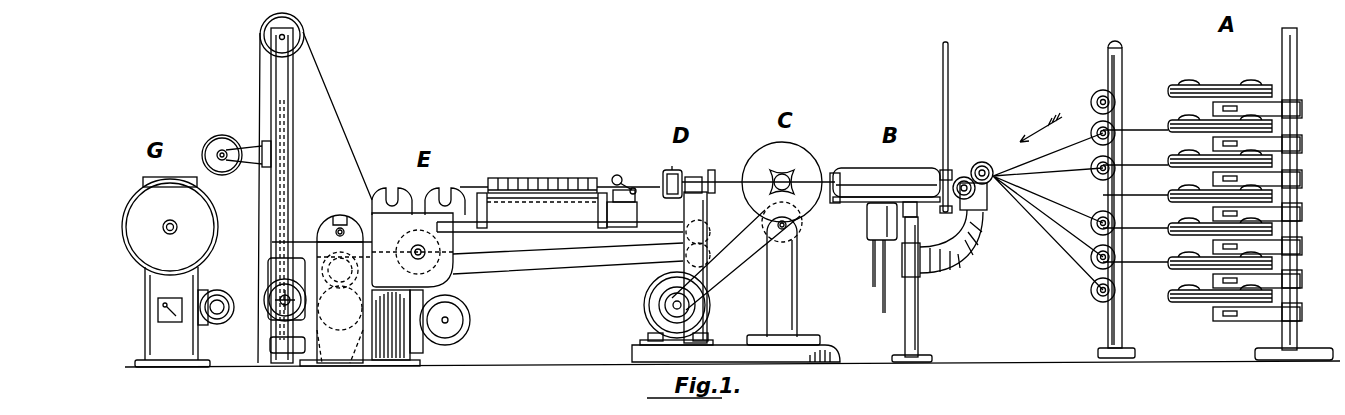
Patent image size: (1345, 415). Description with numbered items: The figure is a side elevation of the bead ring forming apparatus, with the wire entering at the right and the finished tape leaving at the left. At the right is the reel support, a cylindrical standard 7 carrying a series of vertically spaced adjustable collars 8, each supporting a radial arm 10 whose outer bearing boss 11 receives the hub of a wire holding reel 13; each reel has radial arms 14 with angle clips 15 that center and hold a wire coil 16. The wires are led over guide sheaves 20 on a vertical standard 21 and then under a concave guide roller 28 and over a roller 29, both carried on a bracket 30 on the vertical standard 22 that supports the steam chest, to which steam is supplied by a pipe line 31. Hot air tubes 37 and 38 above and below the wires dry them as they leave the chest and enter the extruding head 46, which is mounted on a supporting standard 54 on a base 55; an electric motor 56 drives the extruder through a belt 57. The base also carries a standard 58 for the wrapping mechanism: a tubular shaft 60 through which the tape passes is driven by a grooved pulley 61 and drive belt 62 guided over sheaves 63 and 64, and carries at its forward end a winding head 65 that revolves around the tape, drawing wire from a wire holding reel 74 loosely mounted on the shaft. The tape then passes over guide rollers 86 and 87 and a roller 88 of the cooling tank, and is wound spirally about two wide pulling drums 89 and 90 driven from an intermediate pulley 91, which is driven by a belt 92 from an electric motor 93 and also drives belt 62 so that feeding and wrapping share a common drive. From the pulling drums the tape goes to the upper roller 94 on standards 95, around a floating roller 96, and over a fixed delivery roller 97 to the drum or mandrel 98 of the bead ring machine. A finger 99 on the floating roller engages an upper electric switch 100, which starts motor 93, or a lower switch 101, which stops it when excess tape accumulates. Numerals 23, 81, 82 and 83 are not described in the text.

The cylindrical standard 7 is at (1297, 88).
The adjustable collars 8 is at (1301, 150).
The radial arm 10 is at (1277, 101).
The bearing boss 11 is at (1213, 323).
The wire holding reel 13 is at (1210, 102).
The radial arms 14 is at (1173, 91).
The angle clip 15 is at (1190, 85).
The wire coil 16 is at (1227, 91).
The guide sheaves 20 is at (1097, 93).
The vertical standard 21 is at (1108, 326).
The vertical standard 22 is at (918, 315).
The drum 23 is at (908, 170).
The concave guide roller 28 is at (987, 163).
The concave guide roller 29 is at (988, 212).
The bracket 30 is at (966, 256).
The steam pipe line 31 is at (948, 97).
The hot air tube 37 is at (833, 173).
The hot air tube 38 is at (838, 198).
The extruding head 46 is at (787, 172).
The supporting standard 54 is at (794, 275).
The base 55 is at (833, 364).
The electric motor 56 is at (648, 312).
The belt 57 is at (716, 268).
The standard 58 is at (735, 200).
The tubular shaft 60 is at (712, 172).
The grooved pulley 61 is at (719, 172).
The drive belt 62 is at (600, 248).
The sheave 63 is at (704, 232).
The sheave 64 is at (708, 257).
The winding head 65 is at (683, 175).
The wire holding reel 74 is at (546, 180).
The bar 81 is at (546, 195).
The lever 82 is at (611, 175).
The bracket 83 is at (631, 175).
The guide roller 86 is at (450, 192).
The guide roller 87 is at (387, 190).
The roller 88 is at (443, 273).
The pulling drum 89 is at (334, 213).
The pulling drum 90 is at (347, 352).
The intermediate pulley 91 is at (322, 336).
The belt 92 is at (388, 368).
The electric motor 93 is at (465, 333).
The upper roller 94 is at (301, 24).
The standards 95 is at (290, 73).
The floating roller 96 is at (263, 298).
The fixed delivery roller 97 is at (224, 136).
The drum or mandrel 98 is at (204, 208).
The finger 99 is at (216, 321).
The electric switch 100 is at (268, 272).
The electric switch 101 is at (273, 343).